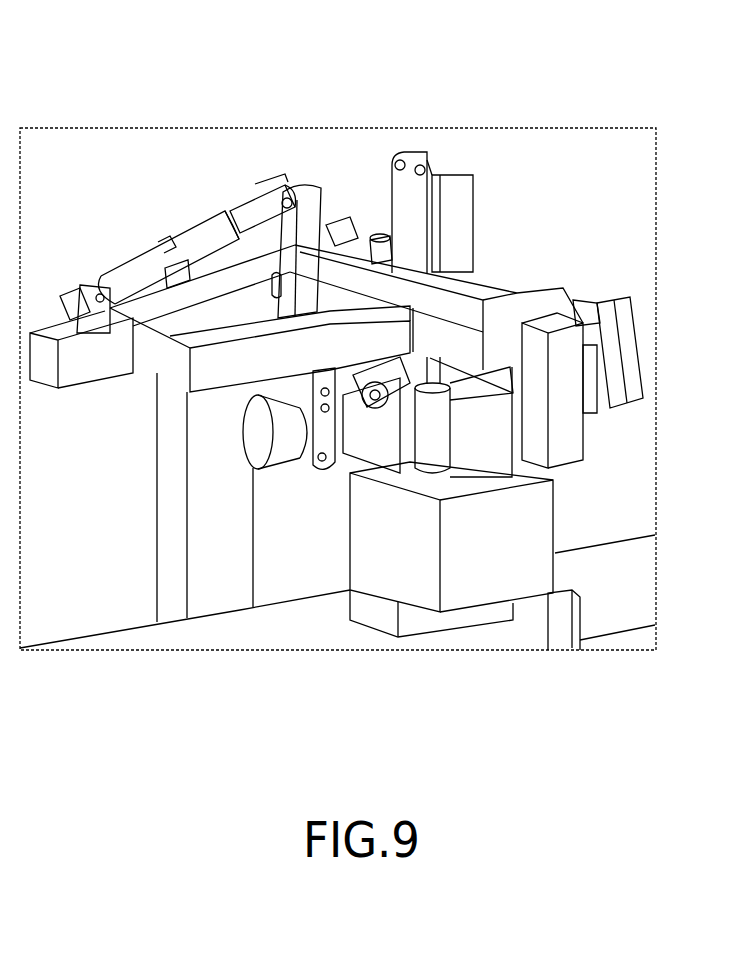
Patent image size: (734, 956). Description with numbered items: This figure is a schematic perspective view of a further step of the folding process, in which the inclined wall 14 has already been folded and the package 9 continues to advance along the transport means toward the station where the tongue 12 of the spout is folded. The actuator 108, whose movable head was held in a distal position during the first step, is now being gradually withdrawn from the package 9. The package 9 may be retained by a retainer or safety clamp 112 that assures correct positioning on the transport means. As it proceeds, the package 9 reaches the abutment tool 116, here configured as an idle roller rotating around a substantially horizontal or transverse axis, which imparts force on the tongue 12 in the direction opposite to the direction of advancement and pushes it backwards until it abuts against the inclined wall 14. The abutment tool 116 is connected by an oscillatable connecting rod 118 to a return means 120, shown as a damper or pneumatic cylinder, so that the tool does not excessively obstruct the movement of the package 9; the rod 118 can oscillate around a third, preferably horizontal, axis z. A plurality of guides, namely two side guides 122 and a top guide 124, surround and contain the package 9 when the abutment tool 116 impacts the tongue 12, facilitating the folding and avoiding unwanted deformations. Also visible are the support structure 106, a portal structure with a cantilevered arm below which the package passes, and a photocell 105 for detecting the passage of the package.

The package 9 is at (497, 425).
The tongue 12 is at (385, 445).
The inclined wall 14 is at (405, 405).
The photocell 105 is at (567, 625).
The support structure 106 is at (173, 587).
The actuator 108 is at (478, 163).
The safety clamp 112 is at (427, 592).
The abutment tool 116 is at (273, 447).
The oscillatable rod 118 is at (327, 200).
The return means 120 is at (133, 272).
The side guides 122 is at (440, 400).
The top guide 124 is at (348, 392).
The axis Z z is at (220, 218).